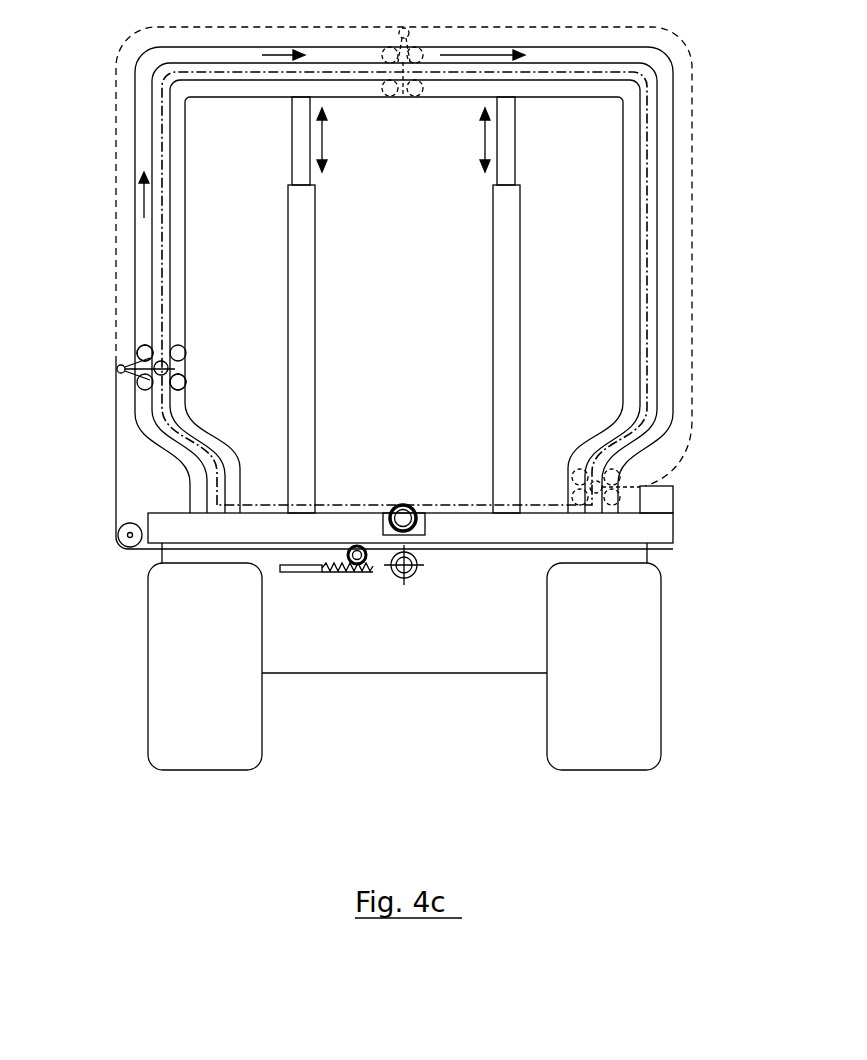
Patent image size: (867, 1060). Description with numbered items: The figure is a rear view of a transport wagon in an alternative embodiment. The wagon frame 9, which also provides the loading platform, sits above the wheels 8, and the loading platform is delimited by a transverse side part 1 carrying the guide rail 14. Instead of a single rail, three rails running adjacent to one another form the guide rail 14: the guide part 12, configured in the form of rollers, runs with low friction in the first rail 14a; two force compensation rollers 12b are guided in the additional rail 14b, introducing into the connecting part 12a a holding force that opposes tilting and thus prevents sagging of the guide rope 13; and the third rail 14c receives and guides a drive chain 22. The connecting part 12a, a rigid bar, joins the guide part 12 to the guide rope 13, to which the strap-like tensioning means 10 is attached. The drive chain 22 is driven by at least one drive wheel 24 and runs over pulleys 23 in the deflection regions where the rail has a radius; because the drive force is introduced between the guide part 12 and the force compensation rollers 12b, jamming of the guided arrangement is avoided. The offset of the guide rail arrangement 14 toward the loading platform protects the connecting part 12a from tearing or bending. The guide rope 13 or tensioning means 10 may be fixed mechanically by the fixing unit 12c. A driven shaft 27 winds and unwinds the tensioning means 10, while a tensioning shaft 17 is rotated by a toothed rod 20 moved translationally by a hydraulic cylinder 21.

The transverse side part 1 is at (405, 280).
The wheels 8 is at (207, 743).
The wagon frame 9 is at (513, 545).
The strap-like tensioning means 10 is at (116, 482).
The guide part 12 is at (200, 341).
The connecting part 12a is at (137, 350).
The force compensation roller 12b is at (190, 366).
The fixing unit 12c is at (658, 502).
The guide rope 13 is at (118, 368).
The guide rail 14 is at (127, 245).
The first guide rail 14a is at (143, 150).
The additional guide rail 14b is at (180, 200).
The third guide rail 14c is at (168, 150).
The tensioning shaft 17 is at (362, 567).
The toothed rod 20 is at (337, 573).
The hydraulic cylinder 21 is at (298, 574).
The drive chain 22 is at (163, 245).
The pulley 23 is at (165, 77).
The drive wheel 24 is at (403, 504).
The driven shaft 27 is at (418, 573).